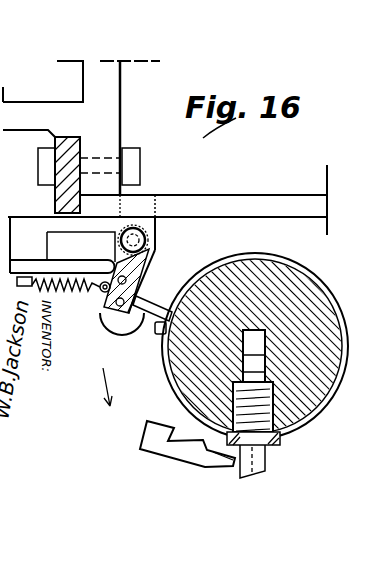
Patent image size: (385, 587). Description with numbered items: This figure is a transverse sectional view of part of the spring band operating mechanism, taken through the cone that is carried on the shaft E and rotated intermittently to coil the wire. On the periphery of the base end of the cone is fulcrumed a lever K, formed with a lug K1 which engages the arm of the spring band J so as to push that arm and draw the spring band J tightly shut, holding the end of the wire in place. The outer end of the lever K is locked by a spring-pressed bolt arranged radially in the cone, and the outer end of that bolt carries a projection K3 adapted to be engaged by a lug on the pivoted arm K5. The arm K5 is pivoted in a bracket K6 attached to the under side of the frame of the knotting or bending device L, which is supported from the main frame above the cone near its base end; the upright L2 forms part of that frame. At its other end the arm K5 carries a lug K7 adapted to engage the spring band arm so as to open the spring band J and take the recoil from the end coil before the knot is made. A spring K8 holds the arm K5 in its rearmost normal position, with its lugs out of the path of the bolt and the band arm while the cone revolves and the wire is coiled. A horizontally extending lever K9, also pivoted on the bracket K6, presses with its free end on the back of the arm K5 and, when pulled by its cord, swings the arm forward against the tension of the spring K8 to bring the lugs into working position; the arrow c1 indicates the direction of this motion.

The knotting or bending device L is at (81, 81).
The frame upright L2 is at (122, 104).
The lever K9 is at (86, 268).
The spring K8 is at (101, 292).
The bracket K6 is at (147, 241).
The arm K5 is at (110, 310).
The lug K7 is at (120, 331).
The shaft E is at (325, 326).
The spring band J is at (304, 279).
The lever K is at (252, 372).
The projection K3 is at (266, 466).
The lug K1 is at (152, 427).
The direction arrow c1 is at (114, 387).